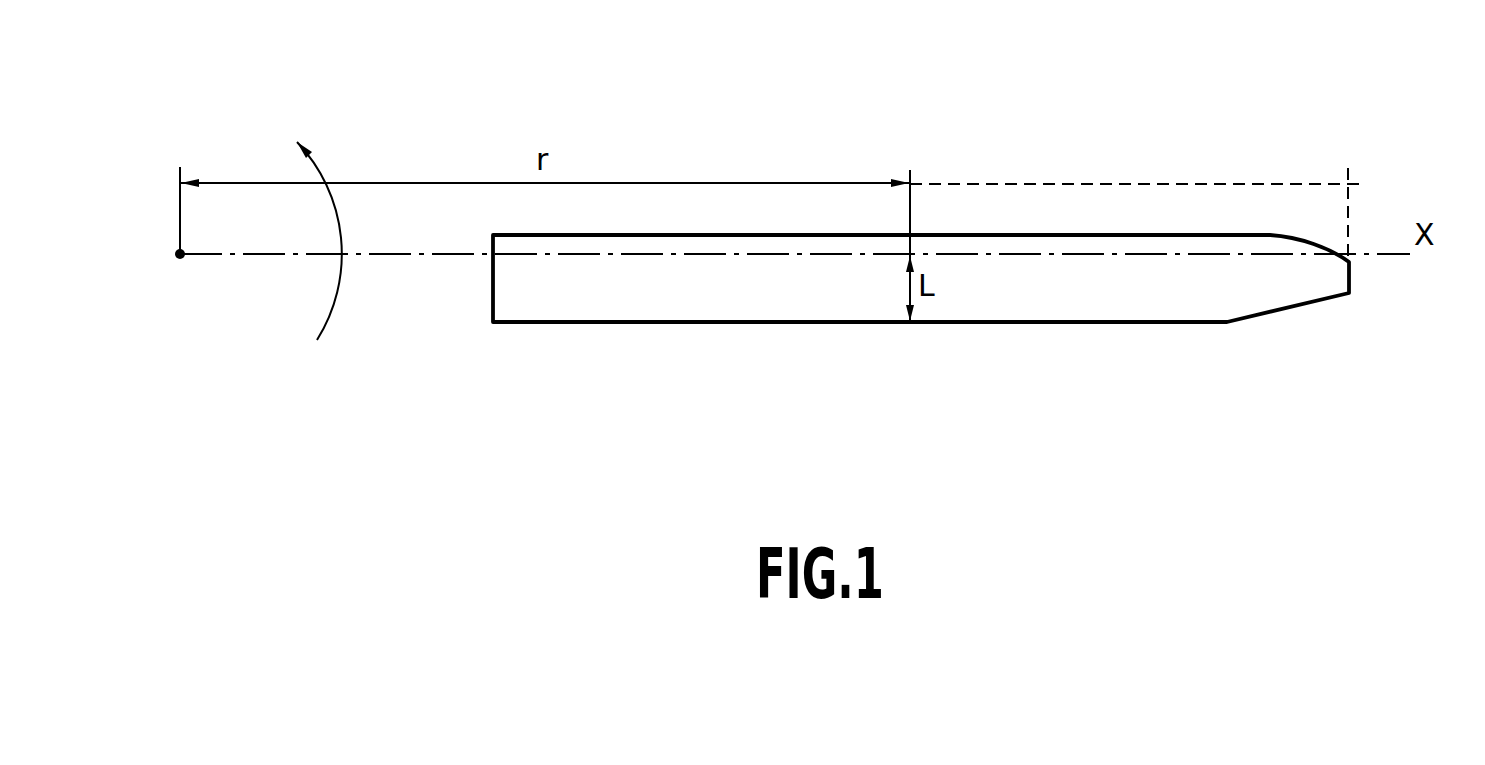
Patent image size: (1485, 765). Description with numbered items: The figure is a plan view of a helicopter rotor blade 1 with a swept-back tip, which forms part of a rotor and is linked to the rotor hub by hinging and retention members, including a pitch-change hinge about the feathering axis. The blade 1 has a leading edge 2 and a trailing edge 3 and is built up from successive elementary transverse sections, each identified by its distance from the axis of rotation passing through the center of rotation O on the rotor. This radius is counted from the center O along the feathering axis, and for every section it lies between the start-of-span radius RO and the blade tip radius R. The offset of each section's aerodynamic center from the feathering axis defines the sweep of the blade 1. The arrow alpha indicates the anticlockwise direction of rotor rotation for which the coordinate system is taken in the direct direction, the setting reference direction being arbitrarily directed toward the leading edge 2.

The blade 1 is at (1052, 218).
The leading edge 2 is at (715, 234).
The trailing edge 3 is at (775, 323).
The blade tip radius R is at (1352, 178).
The start-of-span radius RO is at (483, 228).
The center of rotation O is at (182, 253).
The rotor rotation direction alpha is at (327, 317).